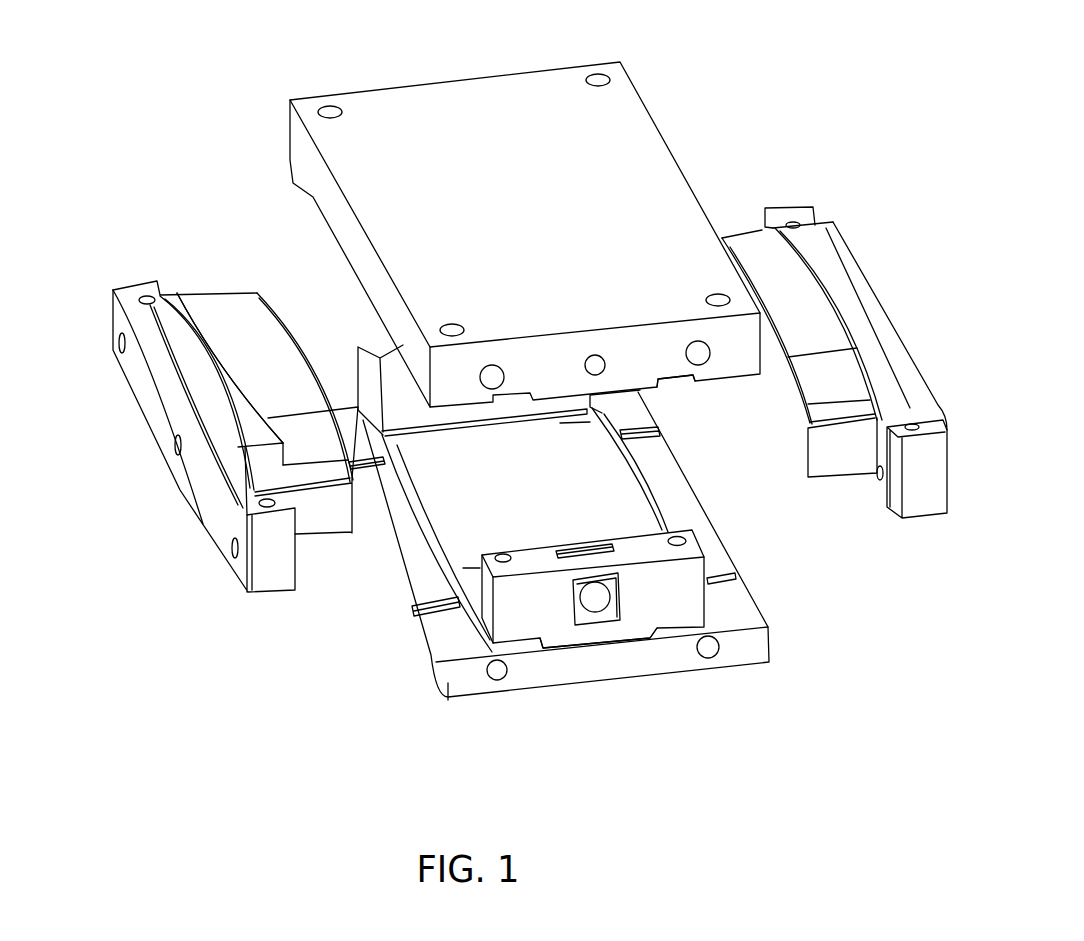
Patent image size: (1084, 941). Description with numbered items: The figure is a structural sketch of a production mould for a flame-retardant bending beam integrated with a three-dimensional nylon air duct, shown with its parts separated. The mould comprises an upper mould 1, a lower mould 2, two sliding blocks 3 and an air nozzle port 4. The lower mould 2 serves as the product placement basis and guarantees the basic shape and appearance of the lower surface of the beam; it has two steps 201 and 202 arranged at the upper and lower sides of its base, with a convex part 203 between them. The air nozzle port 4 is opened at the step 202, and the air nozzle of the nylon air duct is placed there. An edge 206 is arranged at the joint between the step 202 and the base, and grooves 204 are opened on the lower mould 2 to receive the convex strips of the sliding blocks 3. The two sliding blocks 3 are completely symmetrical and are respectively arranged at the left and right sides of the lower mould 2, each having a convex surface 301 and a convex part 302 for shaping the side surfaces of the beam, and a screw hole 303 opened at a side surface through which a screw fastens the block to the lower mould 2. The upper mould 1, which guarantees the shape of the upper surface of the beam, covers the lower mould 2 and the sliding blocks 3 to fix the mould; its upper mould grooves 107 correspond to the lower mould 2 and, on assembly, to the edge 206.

The upper mould 1 is at (587, 150).
The lower mould 2 is at (638, 507).
The sliding blocks 3 is at (498, 398).
The air nozzle port 4 is at (608, 615).
The upper mould grooves 107 is at (680, 380).
The step 201 is at (393, 390).
The step 202 is at (670, 590).
The convex part 203 is at (478, 502).
The grooves 204 is at (438, 618).
The edge 206 is at (513, 640).
The convex surface 301 is at (188, 320).
The convex part 302 is at (230, 317).
The screw hole 303 is at (177, 453).